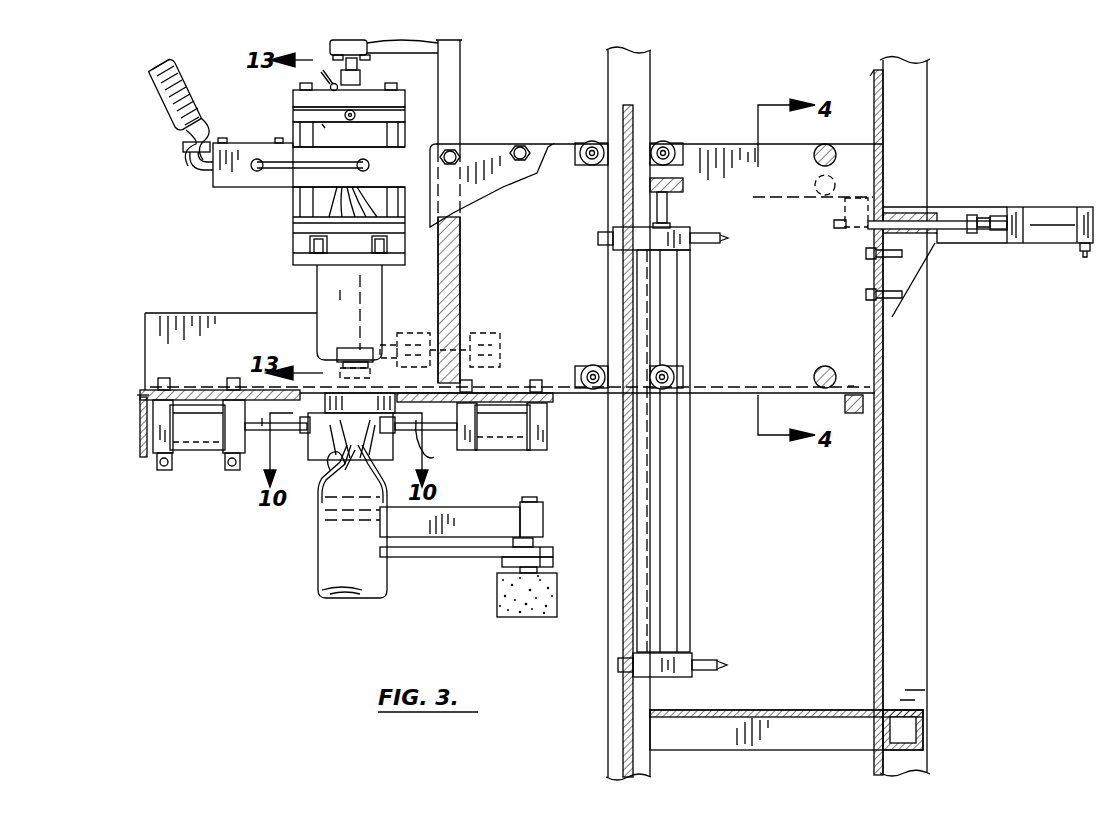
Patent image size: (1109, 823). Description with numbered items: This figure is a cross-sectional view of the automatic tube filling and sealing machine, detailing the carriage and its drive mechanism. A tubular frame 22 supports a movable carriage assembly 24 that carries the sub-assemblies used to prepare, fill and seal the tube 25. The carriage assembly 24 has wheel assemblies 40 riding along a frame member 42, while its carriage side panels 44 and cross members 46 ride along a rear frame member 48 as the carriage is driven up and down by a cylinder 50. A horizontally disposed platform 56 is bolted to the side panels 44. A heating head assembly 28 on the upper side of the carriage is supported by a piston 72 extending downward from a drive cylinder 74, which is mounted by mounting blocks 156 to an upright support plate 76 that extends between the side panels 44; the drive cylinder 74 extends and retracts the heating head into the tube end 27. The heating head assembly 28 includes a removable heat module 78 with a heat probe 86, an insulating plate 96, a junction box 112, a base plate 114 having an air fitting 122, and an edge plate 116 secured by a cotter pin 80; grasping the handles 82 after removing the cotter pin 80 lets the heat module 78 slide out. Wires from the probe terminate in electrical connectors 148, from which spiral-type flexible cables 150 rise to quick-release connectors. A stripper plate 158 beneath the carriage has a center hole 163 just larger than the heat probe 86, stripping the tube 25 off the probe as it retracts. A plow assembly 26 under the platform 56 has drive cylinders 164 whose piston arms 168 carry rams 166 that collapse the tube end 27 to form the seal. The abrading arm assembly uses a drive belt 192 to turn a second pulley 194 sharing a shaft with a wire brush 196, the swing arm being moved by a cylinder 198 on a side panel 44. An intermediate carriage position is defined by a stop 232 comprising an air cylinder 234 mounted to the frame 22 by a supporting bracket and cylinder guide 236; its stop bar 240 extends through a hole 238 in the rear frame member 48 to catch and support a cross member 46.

The tubular frame 22 is at (926, 86).
The carriage assembly 24 is at (130, 362).
The tube 25 is at (318, 580).
The plow assembly 26 is at (236, 488).
The tube end 27 is at (329, 500).
The heating head assembly 28 is at (282, 253).
The wheel assemblies 40 is at (596, 140).
The frame member 42 is at (646, 113).
The carriage side panels 44 is at (720, 138).
The cross members 46 is at (830, 146).
The rear frame member 48 is at (883, 337).
The cylinder 50 is at (683, 544).
The horizontal platform 56 is at (192, 390).
The piston 72 is at (360, 78).
The drive cylinder 74 is at (330, 47).
The support plate 76 is at (461, 96).
The heat module 78 is at (311, 282).
The cotter pin 80 is at (349, 134).
The handles 82 is at (280, 164).
The heat probe 86 is at (330, 298).
The insulating plate 96 is at (300, 254).
The junction box 112 is at (222, 187).
The base plate 114 is at (293, 110).
The edge plate 116 is at (293, 94).
The air fitting 122 is at (356, 115).
The electrical connectors 148 is at (185, 166).
The spiral-type flexible cables 150 is at (158, 118).
The mounting blocks 156 is at (424, 50).
The stripper plate 158 is at (446, 450).
The center hole 163 is at (340, 394).
The drive cylinders 164 is at (207, 442).
The ram 166 is at (320, 465).
The piston arm 168 is at (256, 430).
The drive belt 192 is at (440, 556).
The second pulley 194 is at (553, 557).
The wire brush 196 is at (512, 617).
The cylinder 198 is at (462, 318).
The stop 232 is at (990, 267).
The air cylinder 234 is at (1050, 207).
The supporting bracket and cylinder guide 236 is at (940, 250).
The hole 238 is at (868, 226).
The stop bar 240 is at (945, 220).